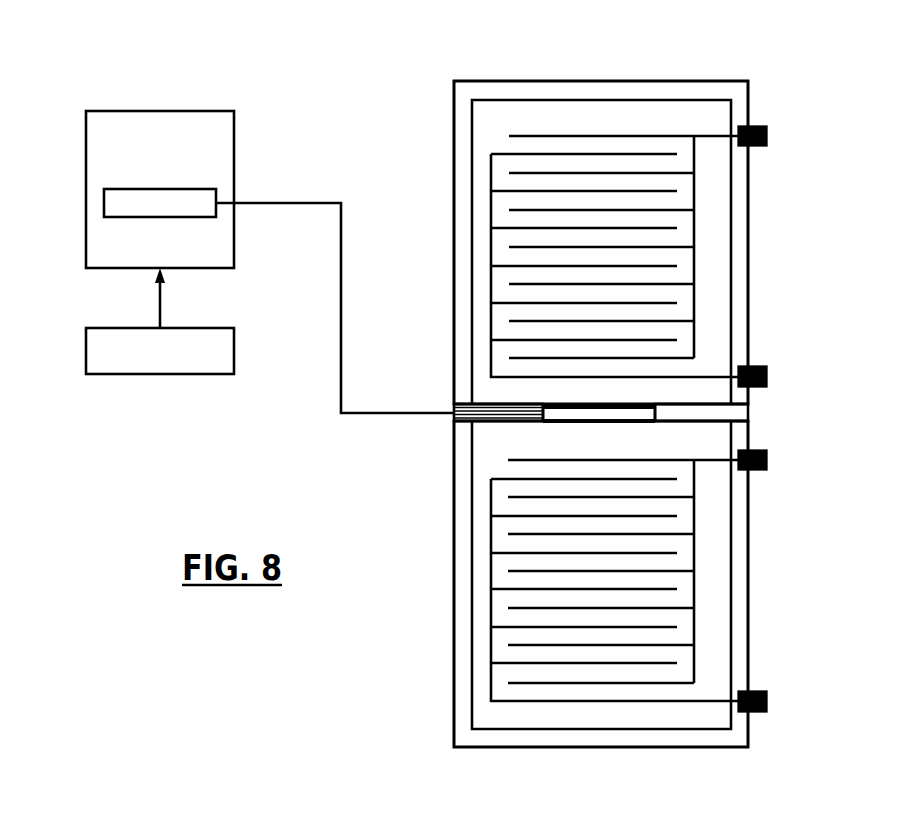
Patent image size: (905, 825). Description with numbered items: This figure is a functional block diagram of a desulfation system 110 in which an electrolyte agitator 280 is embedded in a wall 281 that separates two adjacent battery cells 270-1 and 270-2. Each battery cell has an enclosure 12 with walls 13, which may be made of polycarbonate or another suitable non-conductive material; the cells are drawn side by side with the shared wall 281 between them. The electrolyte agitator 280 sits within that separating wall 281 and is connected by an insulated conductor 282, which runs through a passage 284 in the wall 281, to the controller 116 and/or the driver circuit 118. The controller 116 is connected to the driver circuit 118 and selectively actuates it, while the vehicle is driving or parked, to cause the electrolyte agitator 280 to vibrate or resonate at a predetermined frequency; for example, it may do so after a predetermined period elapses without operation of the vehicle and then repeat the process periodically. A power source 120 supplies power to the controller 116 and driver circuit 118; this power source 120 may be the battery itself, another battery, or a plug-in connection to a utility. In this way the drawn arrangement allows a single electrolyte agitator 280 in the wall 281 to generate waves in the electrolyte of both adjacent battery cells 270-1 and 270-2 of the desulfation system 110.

The enclosure 12 is at (428, 119).
The walls 13 is at (453, 162).
The desulfation system 110 is at (122, 245).
The controller 116 is at (126, 111).
The driver circuit 118 is at (104, 207).
The power source 120 is at (160, 374).
The battery cell 270-1 is at (410, 46).
The battery cell 270-2 is at (408, 648).
The electrolyte agitator 280 is at (548, 422).
The wall 281 is at (700, 422).
The insulated conductor 282 is at (341, 402).
The passage 284 is at (517, 422).